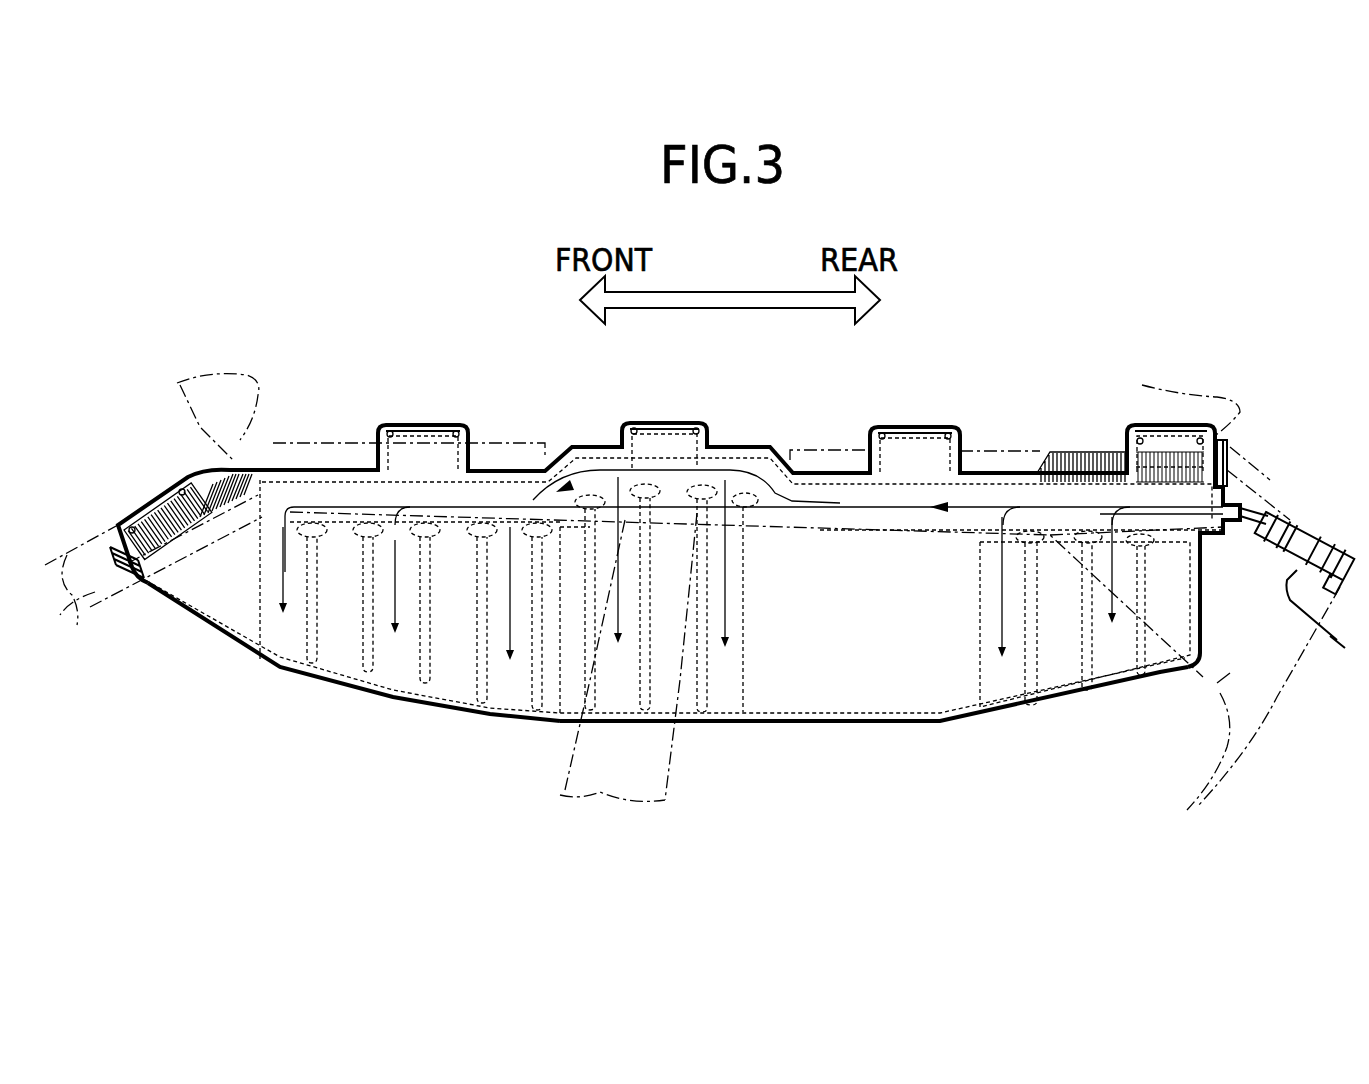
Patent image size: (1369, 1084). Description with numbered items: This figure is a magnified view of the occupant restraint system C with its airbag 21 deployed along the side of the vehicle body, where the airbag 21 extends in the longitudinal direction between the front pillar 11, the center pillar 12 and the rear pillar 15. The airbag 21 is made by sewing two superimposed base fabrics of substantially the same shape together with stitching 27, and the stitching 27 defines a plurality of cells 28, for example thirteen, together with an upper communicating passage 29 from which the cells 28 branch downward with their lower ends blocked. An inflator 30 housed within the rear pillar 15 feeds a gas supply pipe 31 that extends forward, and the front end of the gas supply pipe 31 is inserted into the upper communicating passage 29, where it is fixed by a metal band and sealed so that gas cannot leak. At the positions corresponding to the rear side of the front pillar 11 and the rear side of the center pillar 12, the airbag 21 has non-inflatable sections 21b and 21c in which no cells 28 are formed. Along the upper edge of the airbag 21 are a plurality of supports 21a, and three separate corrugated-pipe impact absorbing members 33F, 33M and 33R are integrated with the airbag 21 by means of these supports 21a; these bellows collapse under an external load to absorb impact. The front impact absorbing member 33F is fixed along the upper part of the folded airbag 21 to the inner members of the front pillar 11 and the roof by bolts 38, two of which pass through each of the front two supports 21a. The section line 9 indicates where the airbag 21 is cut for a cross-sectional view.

The airbag 21 is at (827, 732).
The supports 21a is at (157, 505).
The non-inflatable section 21b is at (227, 618).
The non-inflatable section 21c is at (902, 722).
The bolts 38 is at (117, 521).
The impact absorbing member 33F is at (247, 480).
The impact absorbing member 33M is at (778, 457).
The impact absorbing member 33R is at (1077, 452).
The occupant restraint system C is at (328, 420).
The upper communicating passage 29 is at (555, 470).
The stitching 27 is at (262, 553).
The cells 28 is at (383, 693).
The front pillar 11 is at (97, 595).
The center pillar 12 is at (575, 770).
The rear pillar 15 is at (1217, 687).
The inflator 30 is at (1340, 552).
The gas supply pipe 31 is at (1262, 530).
The section line 9 is at (500, 634).